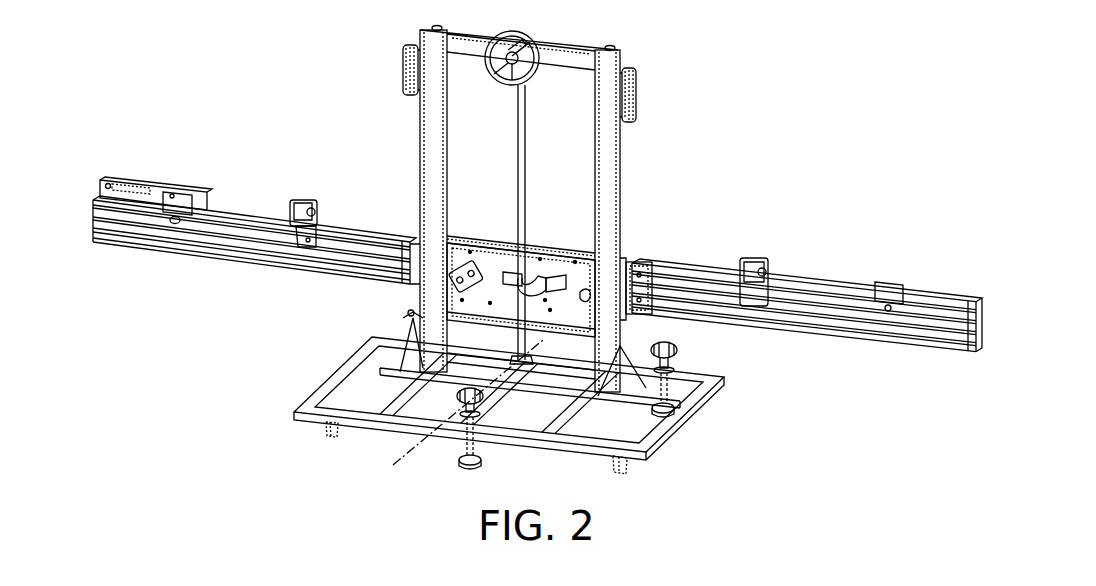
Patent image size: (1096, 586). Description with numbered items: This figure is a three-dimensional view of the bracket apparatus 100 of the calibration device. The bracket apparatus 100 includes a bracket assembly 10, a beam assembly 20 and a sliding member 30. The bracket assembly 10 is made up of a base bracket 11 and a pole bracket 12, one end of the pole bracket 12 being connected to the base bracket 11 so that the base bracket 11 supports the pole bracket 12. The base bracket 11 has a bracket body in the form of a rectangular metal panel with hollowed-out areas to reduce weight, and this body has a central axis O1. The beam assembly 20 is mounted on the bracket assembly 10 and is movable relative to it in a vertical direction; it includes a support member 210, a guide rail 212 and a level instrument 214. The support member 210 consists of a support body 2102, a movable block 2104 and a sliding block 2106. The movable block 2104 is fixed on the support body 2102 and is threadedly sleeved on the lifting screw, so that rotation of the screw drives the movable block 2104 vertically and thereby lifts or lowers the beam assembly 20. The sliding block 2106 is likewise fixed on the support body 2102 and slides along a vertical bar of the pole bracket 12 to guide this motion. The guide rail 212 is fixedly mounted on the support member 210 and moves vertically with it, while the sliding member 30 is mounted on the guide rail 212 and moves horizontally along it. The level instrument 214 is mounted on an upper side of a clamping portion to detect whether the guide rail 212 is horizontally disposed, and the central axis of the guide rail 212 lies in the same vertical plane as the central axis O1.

The bracket apparatus 100 is at (676, 101).
The bracket assembly 10 is at (298, 293).
The base bracket 11 is at (373, 345).
The pole bracket 12 is at (430, 295).
The beam assembly 20 is at (746, 137).
The support member 210 is at (702, 173).
The support body 2102 is at (556, 252).
The movable block 2104 is at (560, 274).
The sliding block 2106 is at (628, 262).
The guide rail 212 is at (665, 272).
The level instrument 214 is at (533, 243).
The sliding member 30 is at (198, 193).
The central axis O1 is at (457, 402).